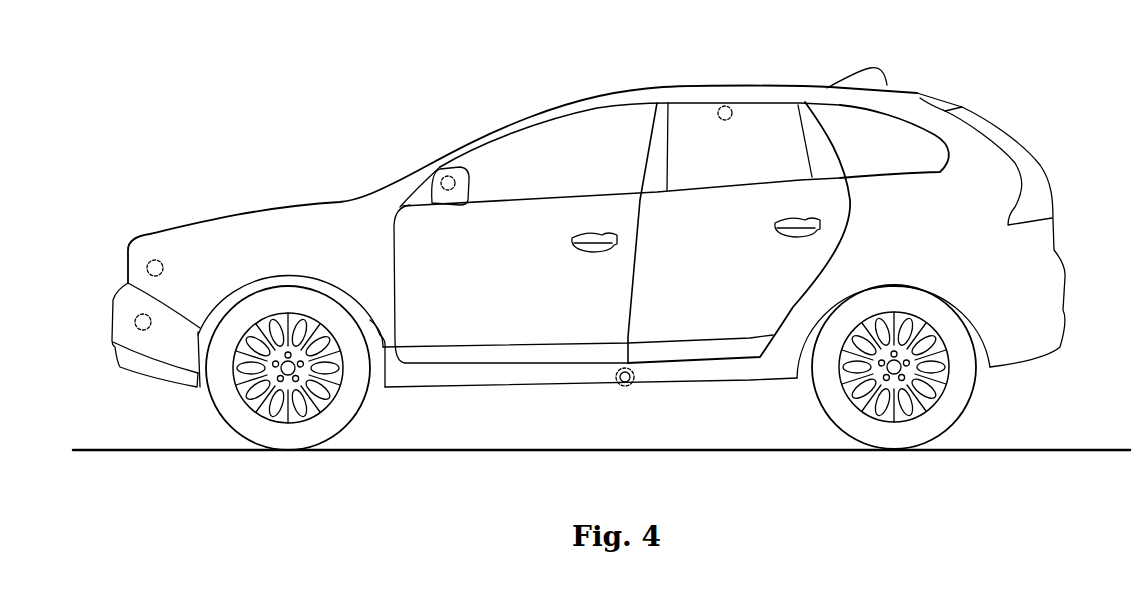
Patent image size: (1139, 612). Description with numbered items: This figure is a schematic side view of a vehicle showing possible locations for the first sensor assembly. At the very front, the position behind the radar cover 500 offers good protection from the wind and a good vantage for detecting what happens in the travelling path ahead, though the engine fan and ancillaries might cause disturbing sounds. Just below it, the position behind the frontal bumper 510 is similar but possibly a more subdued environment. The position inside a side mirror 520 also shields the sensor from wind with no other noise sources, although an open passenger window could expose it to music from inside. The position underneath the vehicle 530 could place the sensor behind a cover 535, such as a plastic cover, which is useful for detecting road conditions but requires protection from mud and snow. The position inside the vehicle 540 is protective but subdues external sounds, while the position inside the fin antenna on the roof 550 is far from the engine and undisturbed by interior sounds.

The position behind the radar cover 500 is at (147, 268).
The position behind the frontal bumper 510 is at (135, 322).
The position inside a side mirror 520 is at (438, 173).
The position underneath the vehicle 530 is at (633, 388).
The cover 535 is at (620, 389).
The position inside the vehicle 540 is at (718, 117).
The position inside the fin antenna on the roof 550 is at (887, 75).